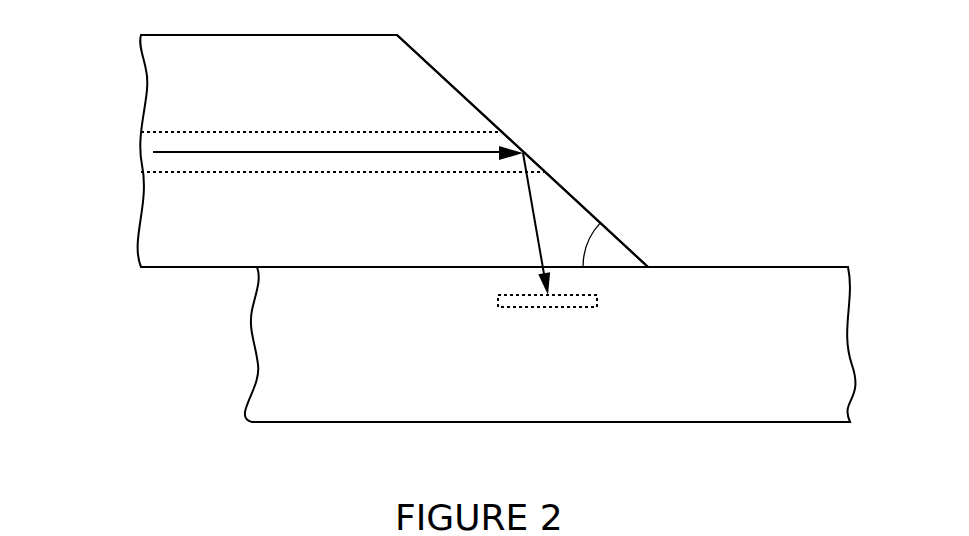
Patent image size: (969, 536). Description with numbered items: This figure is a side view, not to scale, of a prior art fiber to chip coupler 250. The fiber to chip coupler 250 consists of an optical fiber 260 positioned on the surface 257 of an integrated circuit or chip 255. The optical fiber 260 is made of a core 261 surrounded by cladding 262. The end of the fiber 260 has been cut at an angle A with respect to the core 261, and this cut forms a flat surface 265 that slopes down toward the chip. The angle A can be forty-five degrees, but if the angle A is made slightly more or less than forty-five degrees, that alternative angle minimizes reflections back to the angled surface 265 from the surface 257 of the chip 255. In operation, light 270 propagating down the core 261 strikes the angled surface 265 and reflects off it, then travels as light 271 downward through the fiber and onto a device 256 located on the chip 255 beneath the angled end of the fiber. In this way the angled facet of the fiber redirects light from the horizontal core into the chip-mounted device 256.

The fiber to chip coupler 250 is at (214, 458).
The integrated circuit (chip) 255 is at (332, 344).
The device 256 is at (538, 339).
The surface of the chip 257 is at (789, 234).
The optical fiber 260 is at (157, 34).
The core 261 is at (248, 130).
The cladding 262 is at (223, 245).
The flat surface 265 is at (447, 78).
The light 270 is at (375, 148).
The light 271 is at (533, 215).
The angle A is at (587, 243).